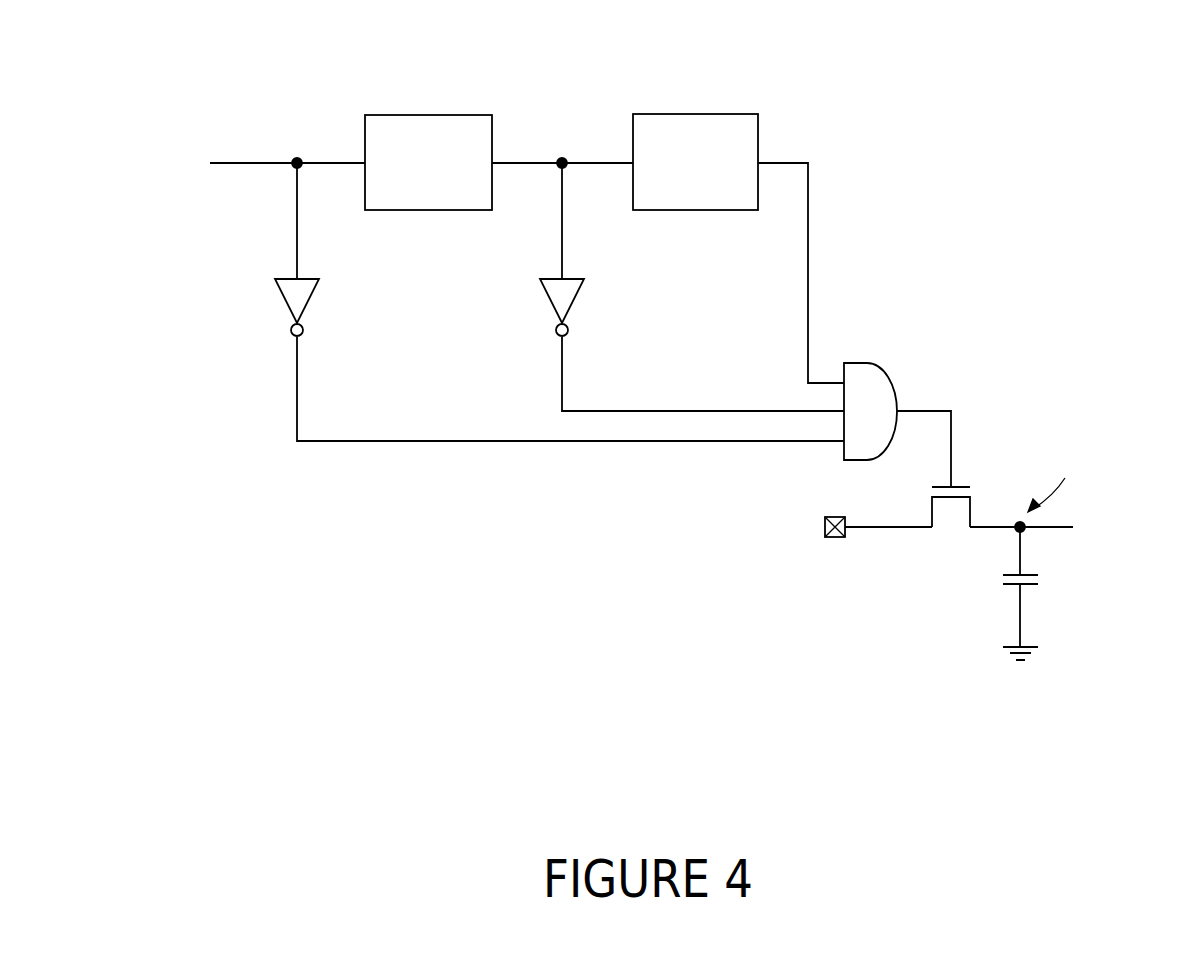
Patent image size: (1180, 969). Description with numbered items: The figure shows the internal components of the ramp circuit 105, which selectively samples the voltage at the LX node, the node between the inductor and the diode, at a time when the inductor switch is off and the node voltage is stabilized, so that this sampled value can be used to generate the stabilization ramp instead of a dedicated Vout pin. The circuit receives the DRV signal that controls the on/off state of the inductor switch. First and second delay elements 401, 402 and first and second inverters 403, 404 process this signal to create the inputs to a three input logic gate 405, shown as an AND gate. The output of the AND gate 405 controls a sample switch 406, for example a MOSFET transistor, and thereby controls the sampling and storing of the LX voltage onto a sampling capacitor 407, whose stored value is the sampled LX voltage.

The ramp circuit 105 is at (202, 49).
The first delay element 401 is at (442, 192).
The second delay element 402 is at (710, 192).
The first inverter 403 is at (288, 327).
The second inverter 404 is at (552, 310).
The three input logic gate 405 is at (875, 362).
The sample switch 406 is at (951, 528).
The sampling capacitor 407 is at (1047, 575).